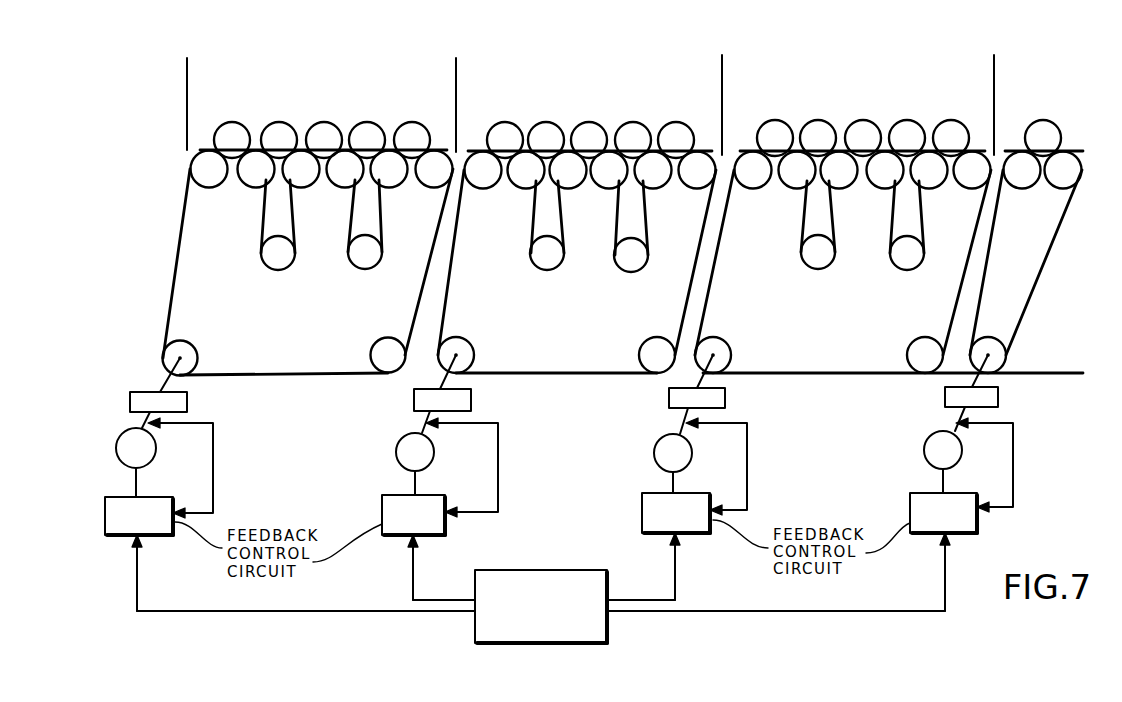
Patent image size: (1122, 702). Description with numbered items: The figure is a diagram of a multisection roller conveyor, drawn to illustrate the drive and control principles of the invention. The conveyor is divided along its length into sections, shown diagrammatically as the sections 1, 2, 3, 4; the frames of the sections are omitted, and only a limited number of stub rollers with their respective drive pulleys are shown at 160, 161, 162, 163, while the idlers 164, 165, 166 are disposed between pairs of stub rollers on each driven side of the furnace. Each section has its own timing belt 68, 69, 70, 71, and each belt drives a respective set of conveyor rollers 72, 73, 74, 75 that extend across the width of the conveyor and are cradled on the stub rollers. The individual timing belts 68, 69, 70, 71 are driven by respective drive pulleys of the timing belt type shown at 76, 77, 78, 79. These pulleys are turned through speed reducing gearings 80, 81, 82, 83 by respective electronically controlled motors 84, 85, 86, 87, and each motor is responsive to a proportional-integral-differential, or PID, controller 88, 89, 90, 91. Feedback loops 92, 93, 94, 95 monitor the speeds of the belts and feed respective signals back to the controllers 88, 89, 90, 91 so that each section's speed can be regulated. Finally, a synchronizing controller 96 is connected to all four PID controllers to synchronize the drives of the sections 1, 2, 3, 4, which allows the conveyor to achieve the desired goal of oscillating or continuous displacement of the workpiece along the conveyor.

The section I 1 is at (328, 82).
The section II 2 is at (612, 83).
The section III 3 is at (864, 79).
The section IV 4 is at (1089, 74).
The timing belt 68 is at (178, 285).
The timing belt 69 is at (449, 300).
The timing belt 70 is at (710, 292).
The timing belt 71 is at (985, 293).
The conveyor rollers 72 is at (270, 137).
The conveyor rollers 73 is at (510, 137).
The conveyor rollers 74 is at (780, 135).
The conveyor rollers 75 is at (1040, 135).
The drive pulley 76 is at (197, 358).
The drive pulley 77 is at (472, 360).
The drive pulley 78 is at (727, 355).
The drive pulley 79 is at (998, 350).
The speed reducing gearing 80 is at (130, 400).
The speed reducing gearing 81 is at (413, 397).
The speed reducing gearing 82 is at (725, 396).
The speed reducing gearing 83 is at (998, 397).
The electronically controlled motor 84 is at (116, 446).
The electronically controlled motor 85 is at (396, 448).
The electronically controlled motor 86 is at (655, 448).
The electronically controlled motor 87 is at (925, 441).
The PID controller 88 is at (105, 518).
The PID controller 89 is at (382, 505).
The PID controller 90 is at (642, 513).
The PID controller 91 is at (910, 507).
The feedback loop 92 is at (213, 462).
The feedback loop 93 is at (498, 470).
The feedback loop 94 is at (747, 462).
The feedback loop 95 is at (1013, 458).
The synchronizing controller 96 is at (590, 632).
The stub rollers and drive pulleys 160 is at (247, 173).
The stub rollers and drive pulleys 161 is at (520, 175).
The stub rollers and drive pulleys 162 is at (788, 177).
The stub rollers and drive pulleys 163 is at (1022, 175).
The idler 164 is at (288, 258).
The idler 165 is at (550, 260).
The idler 166 is at (820, 258).